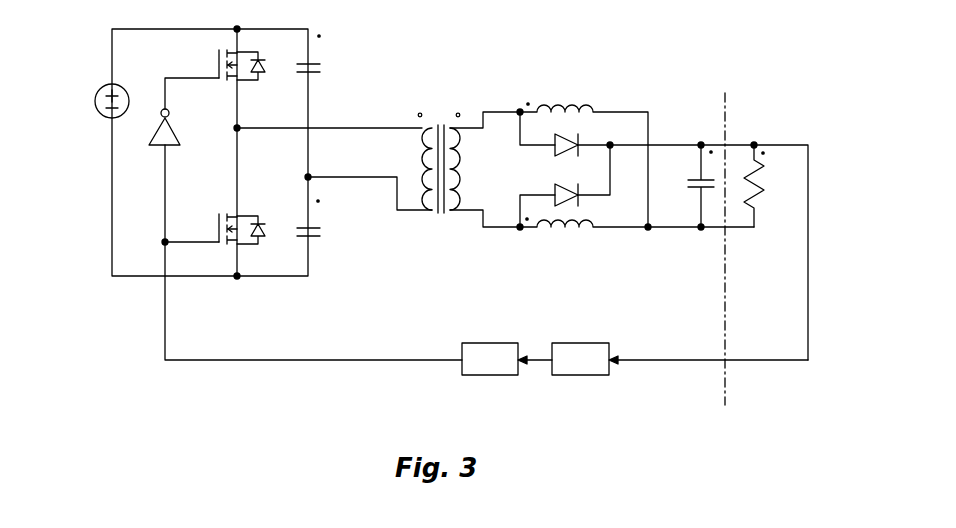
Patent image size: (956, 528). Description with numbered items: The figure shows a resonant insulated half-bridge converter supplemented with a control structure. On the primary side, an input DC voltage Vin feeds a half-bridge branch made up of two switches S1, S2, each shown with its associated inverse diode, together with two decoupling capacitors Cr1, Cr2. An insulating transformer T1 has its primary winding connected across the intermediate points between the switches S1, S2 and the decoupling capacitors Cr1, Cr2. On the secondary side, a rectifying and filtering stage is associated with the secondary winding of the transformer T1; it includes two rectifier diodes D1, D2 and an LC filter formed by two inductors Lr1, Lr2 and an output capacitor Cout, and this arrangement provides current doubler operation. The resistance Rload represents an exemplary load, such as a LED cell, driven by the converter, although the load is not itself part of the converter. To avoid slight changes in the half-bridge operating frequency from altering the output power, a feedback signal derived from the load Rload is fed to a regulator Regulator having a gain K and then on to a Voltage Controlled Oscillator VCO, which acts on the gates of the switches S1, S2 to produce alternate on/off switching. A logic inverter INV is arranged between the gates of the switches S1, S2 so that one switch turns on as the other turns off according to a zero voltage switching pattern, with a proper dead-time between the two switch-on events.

The input DC voltage Vin is at (96, 89).
The logic inverter INV is at (148, 132).
The switch S1 is at (223, 60).
The switch S2 is at (225, 224).
The decoupling capacitor Cr1 is at (327, 72).
The decoupling capacitor Cr2 is at (327, 237).
The insulating transformer T1 is at (469, 165).
The inductor Lr1 is at (582, 150).
The inductor Lr2 is at (635, 239).
The rectifier diode D1 is at (664, 236).
The rectifier diode D2 is at (565, 186).
The output capacitor Cout is at (700, 197).
The load Rload is at (782, 184).
The Voltage Controlled Oscillator VCO is at (507, 359).
The gain K is at (680, 359).
The regulator Regulator is at (635, 376).